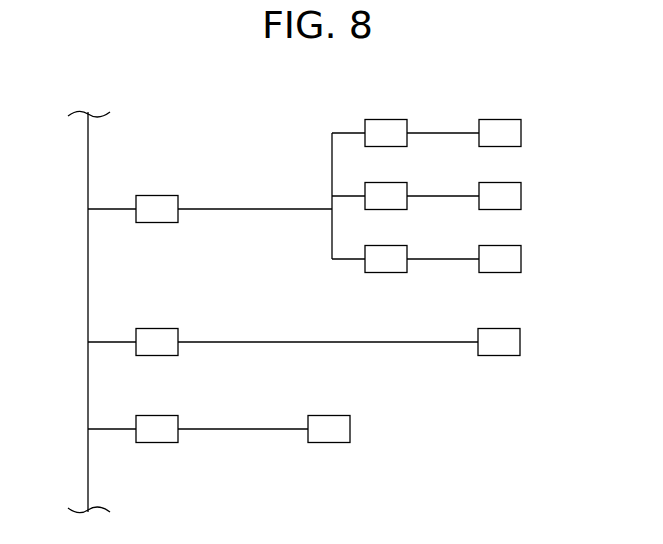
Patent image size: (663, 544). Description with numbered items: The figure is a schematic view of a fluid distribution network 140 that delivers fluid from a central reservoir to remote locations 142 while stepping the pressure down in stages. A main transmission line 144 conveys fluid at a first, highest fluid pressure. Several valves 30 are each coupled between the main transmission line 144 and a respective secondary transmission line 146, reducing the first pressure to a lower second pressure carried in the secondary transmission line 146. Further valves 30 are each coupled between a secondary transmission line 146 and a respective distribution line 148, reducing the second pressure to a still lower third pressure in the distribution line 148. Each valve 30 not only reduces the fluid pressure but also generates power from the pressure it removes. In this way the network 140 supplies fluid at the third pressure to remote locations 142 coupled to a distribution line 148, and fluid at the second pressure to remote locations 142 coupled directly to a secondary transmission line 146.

The fluid distribution network 140 is at (244, 146).
The main transmission line 144 is at (88, 268).
The secondary transmission line 146 is at (257, 209).
The distribution line 148 is at (427, 133).
The valve 30 is at (150, 195).
The remote location 142 is at (521, 133).